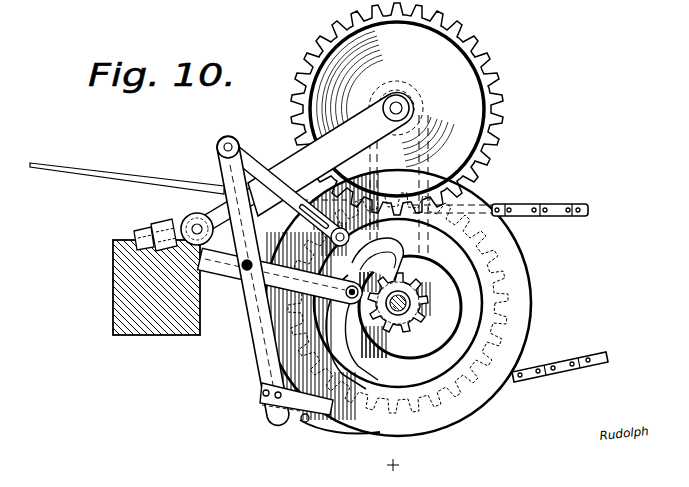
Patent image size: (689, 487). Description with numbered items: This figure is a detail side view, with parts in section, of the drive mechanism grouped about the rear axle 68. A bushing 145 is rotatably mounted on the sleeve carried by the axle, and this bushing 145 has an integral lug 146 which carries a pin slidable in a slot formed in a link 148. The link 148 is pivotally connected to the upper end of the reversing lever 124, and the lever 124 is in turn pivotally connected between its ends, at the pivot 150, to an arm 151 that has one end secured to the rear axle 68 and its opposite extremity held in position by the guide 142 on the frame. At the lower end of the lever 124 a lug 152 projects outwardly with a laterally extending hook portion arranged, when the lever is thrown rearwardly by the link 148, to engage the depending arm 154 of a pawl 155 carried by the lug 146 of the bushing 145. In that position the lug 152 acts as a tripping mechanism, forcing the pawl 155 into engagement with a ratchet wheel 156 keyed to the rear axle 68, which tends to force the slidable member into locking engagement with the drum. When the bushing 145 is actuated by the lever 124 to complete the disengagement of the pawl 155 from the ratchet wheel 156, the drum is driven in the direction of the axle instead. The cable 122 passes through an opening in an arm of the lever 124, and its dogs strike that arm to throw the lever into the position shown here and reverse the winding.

The cable 122 is at (103, 155).
The guide 142 is at (145, 228).
The link 148 is at (273, 133).
The pivotal connection 150 is at (266, 229).
The arm 151 is at (221, 263).
The lug 146 is at (272, 282).
The reversing lever 124 is at (265, 370).
The lug 152 is at (313, 418).
The depending arm 154 is at (371, 420).
The pawl 155 is at (356, 280).
The bushing 145 is at (427, 268).
The rear axle 68 is at (413, 301).
The ratchet wheel 156 is at (416, 318).